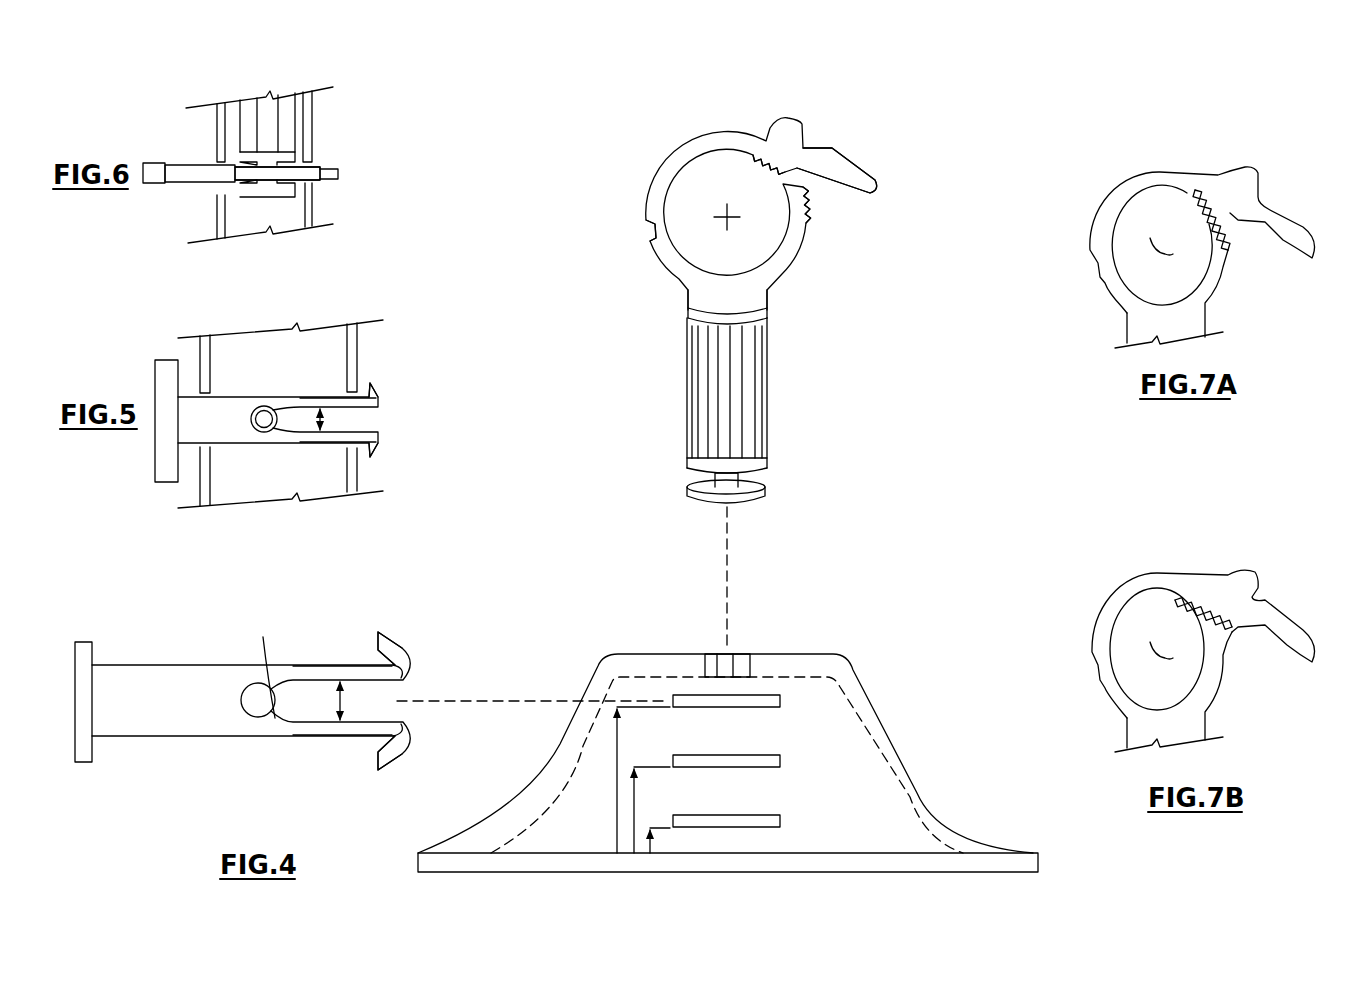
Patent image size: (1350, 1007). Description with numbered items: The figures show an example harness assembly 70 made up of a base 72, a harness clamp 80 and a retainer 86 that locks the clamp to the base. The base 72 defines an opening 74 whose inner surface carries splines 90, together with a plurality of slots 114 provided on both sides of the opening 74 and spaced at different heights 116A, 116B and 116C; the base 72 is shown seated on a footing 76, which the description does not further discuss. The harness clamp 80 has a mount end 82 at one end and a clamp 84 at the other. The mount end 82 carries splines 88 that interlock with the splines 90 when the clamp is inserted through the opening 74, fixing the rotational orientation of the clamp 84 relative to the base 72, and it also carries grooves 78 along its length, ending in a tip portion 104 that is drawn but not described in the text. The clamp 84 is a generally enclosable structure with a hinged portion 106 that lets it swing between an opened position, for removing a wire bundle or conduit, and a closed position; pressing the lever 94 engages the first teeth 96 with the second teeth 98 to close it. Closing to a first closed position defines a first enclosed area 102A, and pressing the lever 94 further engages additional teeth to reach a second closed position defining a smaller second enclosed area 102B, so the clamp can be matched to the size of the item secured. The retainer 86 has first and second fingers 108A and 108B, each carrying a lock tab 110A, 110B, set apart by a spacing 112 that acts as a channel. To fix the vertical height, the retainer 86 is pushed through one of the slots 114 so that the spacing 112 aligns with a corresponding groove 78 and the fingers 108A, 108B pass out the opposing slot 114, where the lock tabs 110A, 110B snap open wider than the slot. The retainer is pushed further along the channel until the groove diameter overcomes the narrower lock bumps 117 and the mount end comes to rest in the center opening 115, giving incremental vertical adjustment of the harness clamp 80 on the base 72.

In FIG. 4, the harness assembly 70 is at (920, 263).
In FIG. 6, the base 72 is at (312, 125).
In FIG. 5, the base 72 is at (355, 371).
In FIG. 4, the base 72 is at (840, 705).
In FIG. 4, the opening 74 is at (722, 650).
In FIG. 4, the base plate 76 is at (527, 876).
In FIG. 6, the grooves 78 is at (300, 162).
In FIG. 4, the grooves 78 is at (763, 482).
In FIG. 4, the harness clamp 80 is at (880, 148).
In FIG. 4, the mount end 82 is at (768, 447).
In FIG. 4, the clamp 84 is at (783, 263).
In FIG. 6, the retainer 86 is at (188, 183).
In FIG. 5, the retainer 86 is at (198, 433).
In FIG. 4, the retainer 86 is at (307, 638).
In FIG. 6, the splines 88 is at (268, 117).
In FIG. 4, the splines 88 is at (750, 438).
In FIG. 4, the splines 90 is at (746, 670).
In FIG. 4, the lever 94 is at (835, 160).
In FIG. 7A, the lever 94 is at (1300, 227).
In FIG. 7B, the lever 94 is at (1298, 630).
In FIG. 4, the first teeth 96 is at (812, 218).
In FIG. 7A, the first teeth 96 is at (1235, 249).
In FIG. 7B, the first teeth 96 is at (1235, 614).
In FIG. 4, the second teeth 98 is at (760, 171).
In FIG. 7A, the second teeth 98 is at (1195, 200).
In FIG. 7B, the second teeth 98 is at (1185, 612).
In FIG. 7A, the first enclosed area 102A is at (1158, 250).
In FIG. 7B, the second enclosed area 102B is at (1158, 655).
In FIG. 6, the eyelet 104 is at (253, 173).
In FIG. 5, the eyelet 104 is at (262, 406).
In FIG. 4, the eyelet 104 is at (710, 486).
In FIG. 4, the hinged portion 106 is at (651, 244).
In FIG. 5, the first finger 108A is at (300, 403).
In FIG. 4, the first finger 108A is at (343, 668).
In FIG. 5, the second finger 108B is at (297, 435).
In FIG. 4, the second finger 108B is at (332, 730).
In FIG. 5, the lock tab 110A is at (377, 387).
In FIG. 4, the lock tab 110A is at (402, 644).
In FIG. 5, the lock tab 110B is at (377, 450).
In FIG. 4, the lock tab 110B is at (400, 757).
In FIG. 5, the spacing 112 is at (323, 418).
In FIG. 4, the spacing 112 is at (336, 702).
In FIG. 4, the slots 114 is at (782, 702).
In FIG. 4, the center opening 115 is at (252, 712).
In FIG. 4, the height 116A is at (616, 754).
In FIG. 4, the height 116B is at (632, 823).
In FIG. 4, the height 116C is at (647, 847).
In FIG. 4, the lock bumps 117 is at (283, 688).